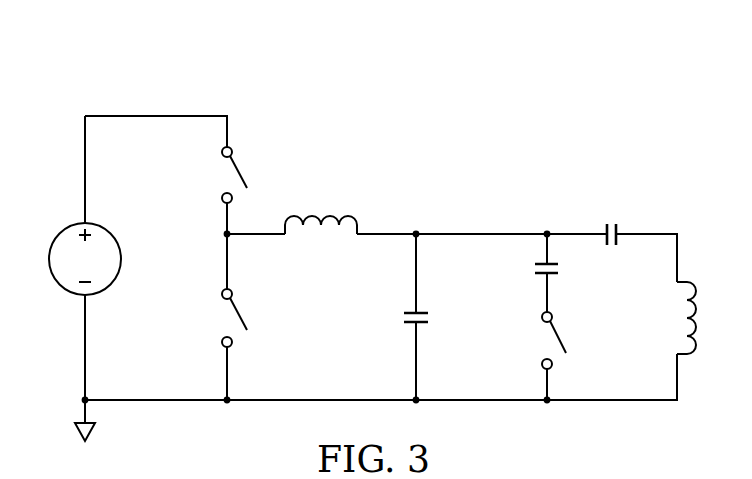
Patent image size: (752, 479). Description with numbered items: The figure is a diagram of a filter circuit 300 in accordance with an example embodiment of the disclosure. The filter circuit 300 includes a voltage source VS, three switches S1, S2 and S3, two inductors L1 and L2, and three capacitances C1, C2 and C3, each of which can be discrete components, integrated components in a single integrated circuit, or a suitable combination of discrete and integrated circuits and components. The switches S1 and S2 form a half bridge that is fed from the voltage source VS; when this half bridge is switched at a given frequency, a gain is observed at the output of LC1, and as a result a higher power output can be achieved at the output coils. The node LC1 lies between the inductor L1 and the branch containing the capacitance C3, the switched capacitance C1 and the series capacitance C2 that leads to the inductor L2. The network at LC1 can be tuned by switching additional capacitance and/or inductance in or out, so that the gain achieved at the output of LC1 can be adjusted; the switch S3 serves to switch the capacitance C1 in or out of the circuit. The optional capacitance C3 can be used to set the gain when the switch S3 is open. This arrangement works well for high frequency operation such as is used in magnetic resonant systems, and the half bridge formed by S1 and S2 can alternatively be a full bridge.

The filter circuit 300 is at (477, 93).
The voltage source VS is at (69, 259).
The switch S1 is at (220, 175).
The switch S2 is at (220, 318).
The switch S3 is at (538, 340).
The inductor L1 is at (321, 207).
The inductor L2 is at (701, 318).
The capacitance C1 is at (563, 276).
The capacitance C2 is at (611, 214).
The capacitance C3 is at (432, 324).
The LC output LC1 is at (481, 220).